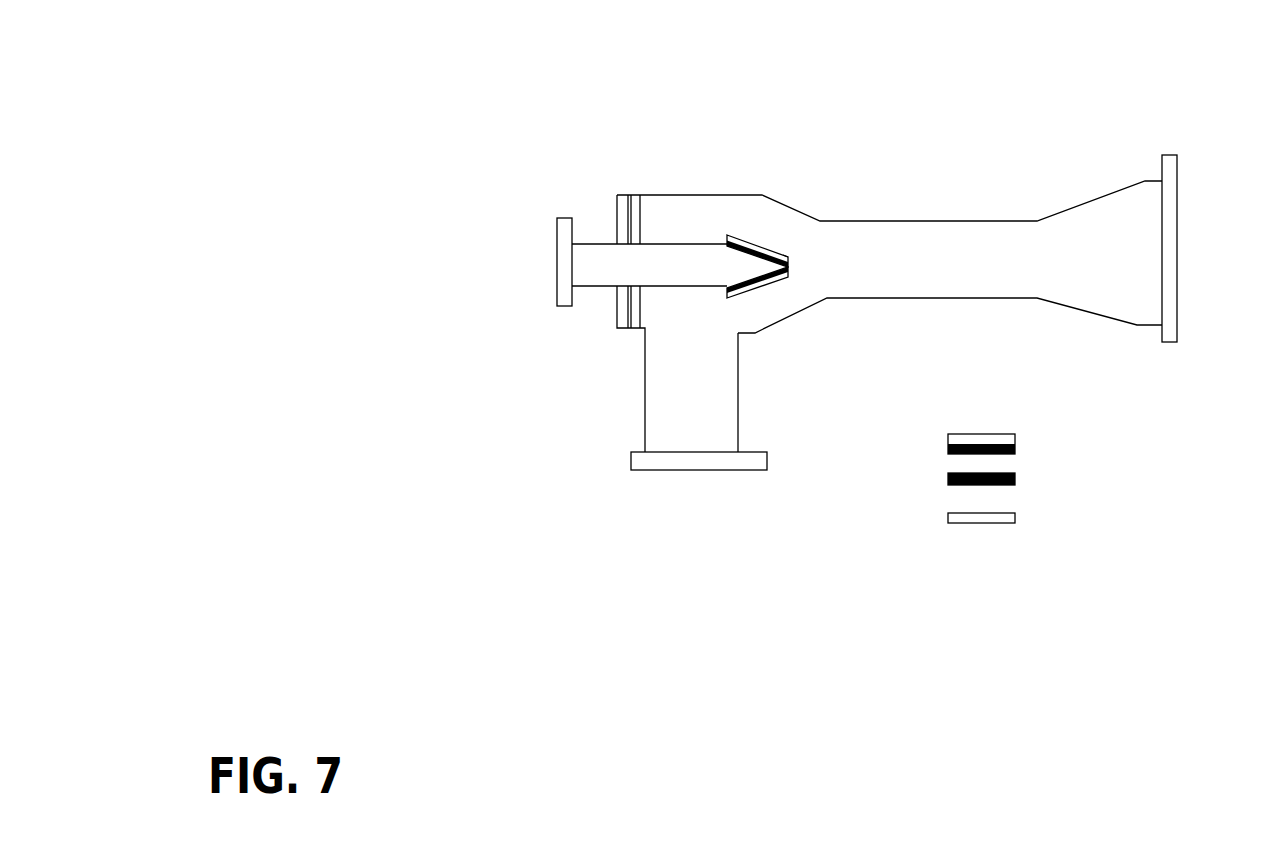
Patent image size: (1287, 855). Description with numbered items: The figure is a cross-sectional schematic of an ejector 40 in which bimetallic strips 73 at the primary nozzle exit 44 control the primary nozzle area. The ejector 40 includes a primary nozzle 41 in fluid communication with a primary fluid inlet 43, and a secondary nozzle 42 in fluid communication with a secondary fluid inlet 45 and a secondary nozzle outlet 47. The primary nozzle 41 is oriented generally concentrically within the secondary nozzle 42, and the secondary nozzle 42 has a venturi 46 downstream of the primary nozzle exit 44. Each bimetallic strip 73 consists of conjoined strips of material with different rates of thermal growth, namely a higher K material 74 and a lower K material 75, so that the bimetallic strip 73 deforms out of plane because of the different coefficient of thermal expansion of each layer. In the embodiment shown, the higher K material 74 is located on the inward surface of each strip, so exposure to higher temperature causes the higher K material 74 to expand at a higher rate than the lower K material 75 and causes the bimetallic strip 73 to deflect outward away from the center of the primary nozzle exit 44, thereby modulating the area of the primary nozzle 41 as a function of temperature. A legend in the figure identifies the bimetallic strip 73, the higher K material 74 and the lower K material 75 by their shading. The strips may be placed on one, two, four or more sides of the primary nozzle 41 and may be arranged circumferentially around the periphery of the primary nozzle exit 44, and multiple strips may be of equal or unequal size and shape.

The ejector 40 is at (887, 248).
The primary nozzle 41 is at (767, 284).
The secondary nozzle 42 is at (1015, 221).
The primary fluid inlet 43 is at (563, 306).
The primary nozzle exit 44 is at (779, 256).
The secondary fluid inlet 45 is at (738, 405).
The venturi 46 is at (962, 300).
The secondary nozzle outlet 47 is at (1167, 342).
The bimetallic strip 73 is at (768, 250).
The higher K material 74 is at (1103, 481).
The lower K material 75 is at (1099, 520).